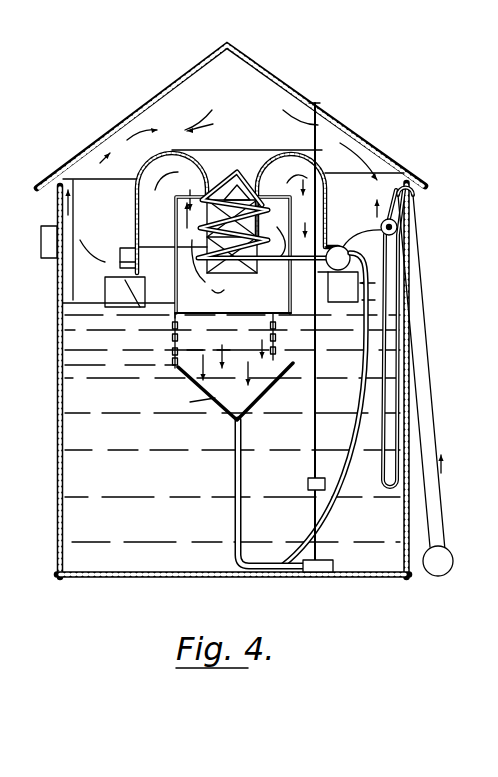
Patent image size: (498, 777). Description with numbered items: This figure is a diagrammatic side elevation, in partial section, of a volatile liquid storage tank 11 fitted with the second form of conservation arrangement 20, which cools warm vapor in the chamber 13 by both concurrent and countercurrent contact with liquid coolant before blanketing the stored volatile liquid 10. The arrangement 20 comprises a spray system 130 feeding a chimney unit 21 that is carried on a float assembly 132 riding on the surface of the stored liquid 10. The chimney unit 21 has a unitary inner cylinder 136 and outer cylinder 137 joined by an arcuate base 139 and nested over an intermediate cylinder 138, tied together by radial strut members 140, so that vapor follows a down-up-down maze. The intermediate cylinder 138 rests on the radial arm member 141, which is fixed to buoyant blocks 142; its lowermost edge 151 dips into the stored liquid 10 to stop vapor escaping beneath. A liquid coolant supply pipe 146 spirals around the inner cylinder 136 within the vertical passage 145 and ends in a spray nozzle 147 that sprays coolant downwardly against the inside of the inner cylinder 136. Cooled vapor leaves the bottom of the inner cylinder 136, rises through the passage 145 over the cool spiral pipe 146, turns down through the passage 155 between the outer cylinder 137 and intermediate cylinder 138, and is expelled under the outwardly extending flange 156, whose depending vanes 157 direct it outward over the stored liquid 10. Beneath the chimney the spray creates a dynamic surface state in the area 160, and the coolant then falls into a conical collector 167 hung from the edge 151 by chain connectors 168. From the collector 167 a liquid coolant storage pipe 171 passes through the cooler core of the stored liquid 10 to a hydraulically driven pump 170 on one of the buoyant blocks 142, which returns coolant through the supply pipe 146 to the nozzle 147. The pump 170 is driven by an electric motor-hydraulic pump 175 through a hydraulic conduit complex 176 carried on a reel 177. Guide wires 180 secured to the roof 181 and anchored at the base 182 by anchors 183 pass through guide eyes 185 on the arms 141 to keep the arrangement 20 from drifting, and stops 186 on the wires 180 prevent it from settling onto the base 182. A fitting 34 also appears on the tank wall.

The stored volatile liquid 10 is at (73, 298).
The tank 11 is at (92, 583).
The chamber 13 is at (380, 168).
The conservation arrangement 20 is at (168, 348).
The chimney unit 21 is at (232, 160).
The inlet fitting 34 is at (40, 246).
The spray system 130 is at (203, 205).
The float assembly 132 is at (368, 290).
The inner cylinder 136 is at (205, 240).
The outer cylinder 137 is at (325, 222).
The intermediate cylinder 138 is at (316, 343).
The arcuate base 139 is at (155, 168).
The radial strut members 140 is at (173, 247).
The radial arm member 141 is at (135, 300).
The buoyant blocks 142 is at (178, 318).
The vertical passage 145 is at (170, 218).
The liquid coolant supply pipe 146 is at (287, 281).
The spray nozzle 147 is at (262, 156).
The lowermost edge 151 is at (173, 330).
The passage 155 is at (135, 182).
The outwardly extending flange 156 is at (127, 248).
The vanes 157 is at (121, 262).
The area 160 is at (175, 370).
The conical collector 167 is at (260, 402).
The chain connectors 168 is at (280, 343).
The pump 170 is at (352, 252).
The liquid coolant storage pipe 171 is at (249, 535).
The electric motor-hydraulic pump 175 is at (455, 557).
The hydraulic conduit complex 176 is at (430, 418).
The reel 177 is at (397, 225).
The guide wires 180 is at (325, 514).
The roof 181 is at (270, 68).
The base 182 is at (363, 577).
The anchors 183 is at (332, 567).
The guide eyes 185 is at (318, 280).
The stops 186 is at (307, 484).